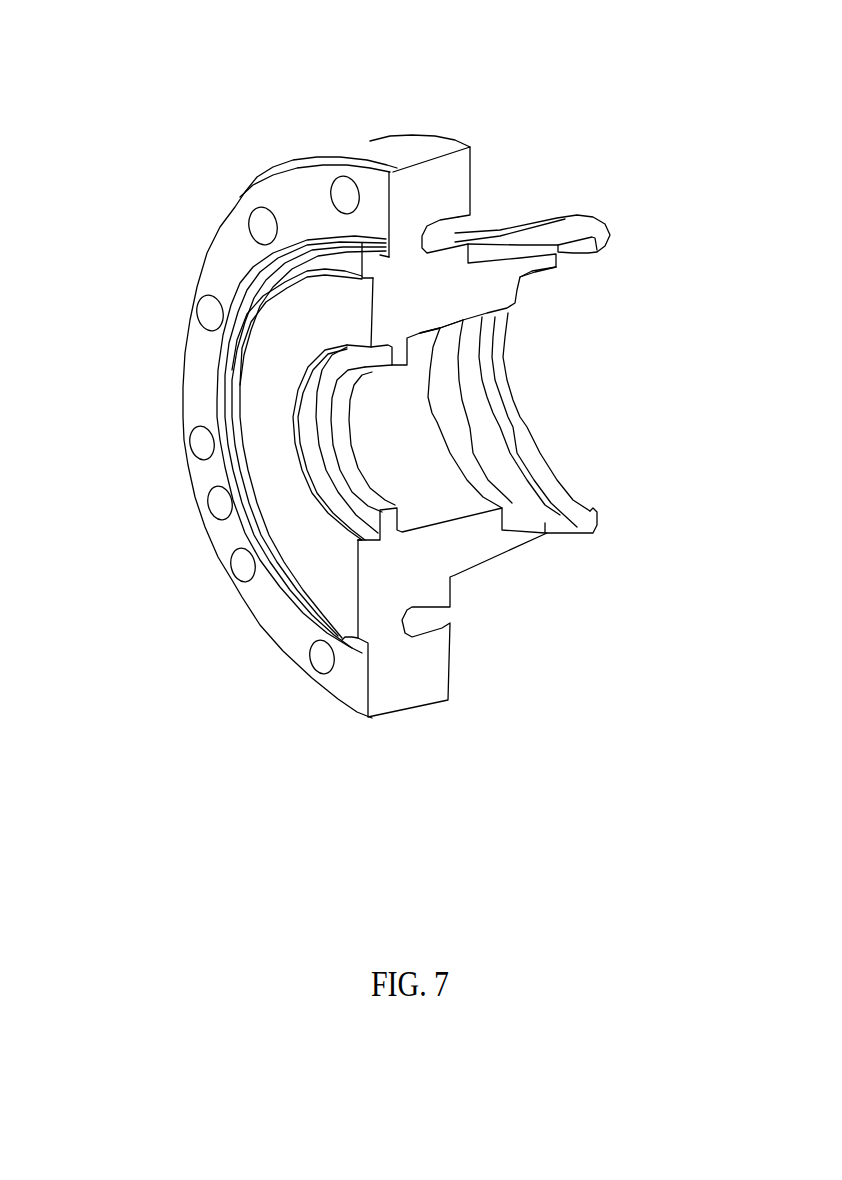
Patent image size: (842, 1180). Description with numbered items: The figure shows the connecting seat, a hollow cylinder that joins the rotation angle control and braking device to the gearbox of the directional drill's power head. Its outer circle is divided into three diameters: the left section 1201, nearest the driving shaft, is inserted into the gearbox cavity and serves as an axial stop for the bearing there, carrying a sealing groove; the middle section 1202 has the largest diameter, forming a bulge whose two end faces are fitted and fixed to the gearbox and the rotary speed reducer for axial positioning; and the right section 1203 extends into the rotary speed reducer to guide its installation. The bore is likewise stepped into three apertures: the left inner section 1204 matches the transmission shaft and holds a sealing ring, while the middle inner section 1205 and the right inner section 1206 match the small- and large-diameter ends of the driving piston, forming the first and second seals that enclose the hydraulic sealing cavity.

The left section 1201 is at (248, 283).
The middle section 1202 is at (392, 165).
The right section 1203 is at (522, 247).
The left inner section 1204 is at (357, 530).
The middle inner section 1205 is at (437, 497).
The right inner section 1206 is at (520, 518).